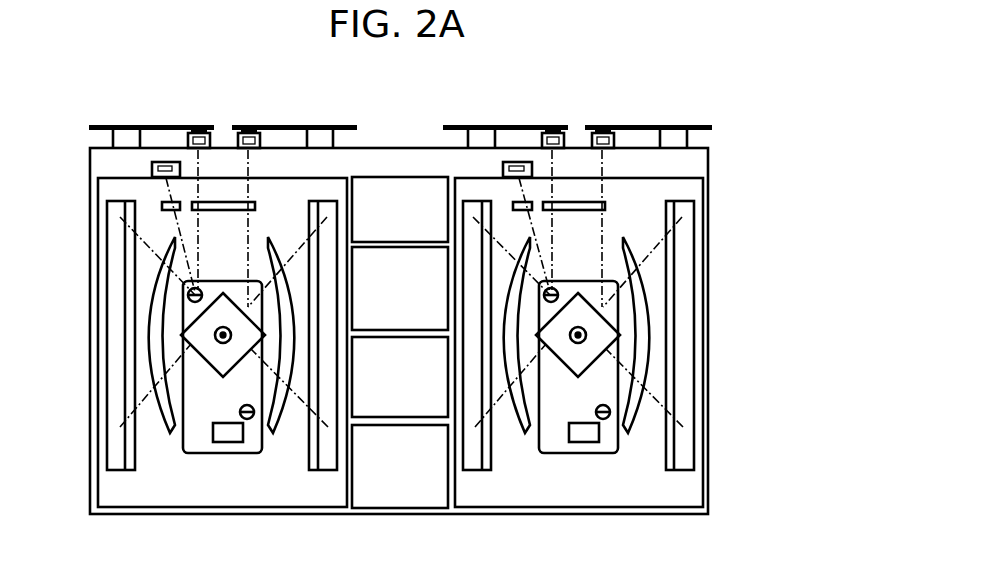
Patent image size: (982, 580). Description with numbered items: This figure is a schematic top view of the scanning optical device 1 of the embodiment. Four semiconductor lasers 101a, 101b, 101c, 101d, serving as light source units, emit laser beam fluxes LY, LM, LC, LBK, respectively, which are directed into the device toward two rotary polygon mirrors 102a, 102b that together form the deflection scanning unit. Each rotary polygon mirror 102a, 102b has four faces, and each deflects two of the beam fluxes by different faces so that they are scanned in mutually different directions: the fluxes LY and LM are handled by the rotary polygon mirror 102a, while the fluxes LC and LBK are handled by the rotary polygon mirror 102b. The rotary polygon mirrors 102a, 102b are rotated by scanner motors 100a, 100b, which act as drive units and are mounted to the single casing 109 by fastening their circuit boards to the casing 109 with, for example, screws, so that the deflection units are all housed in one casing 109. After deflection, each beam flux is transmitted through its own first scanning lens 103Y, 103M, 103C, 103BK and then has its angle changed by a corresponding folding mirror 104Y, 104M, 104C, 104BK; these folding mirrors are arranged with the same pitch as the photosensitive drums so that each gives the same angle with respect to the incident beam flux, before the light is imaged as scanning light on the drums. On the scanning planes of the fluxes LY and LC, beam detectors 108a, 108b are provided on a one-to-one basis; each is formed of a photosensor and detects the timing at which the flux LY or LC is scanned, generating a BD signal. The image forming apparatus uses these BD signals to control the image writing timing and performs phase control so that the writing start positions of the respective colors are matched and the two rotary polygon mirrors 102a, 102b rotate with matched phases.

The scanning optical device 1 is at (680, 106).
The scanner motor 100a is at (208, 453).
The scanner motor 100b is at (582, 453).
The semiconductor laser 101a is at (199, 129).
The semiconductor laser 101b is at (249, 129).
The semiconductor laser 101c is at (552, 129).
The semiconductor laser 101d is at (603, 129).
The rotary polygon mirror 102a is at (193, 358).
The rotary polygon mirror 102b is at (606, 352).
The first scanning lens 103Y is at (150, 328).
The first scanning lens 103M is at (292, 403).
The first scanning lens 103C is at (505, 400).
The first scanning lens 103BK is at (645, 332).
The folding mirror 104Y is at (110, 292).
The folding mirror 104M is at (323, 470).
The folding mirror 104C is at (473, 470).
The folding mirror 104BK is at (680, 470).
The beam detector 108a is at (152, 163).
The beam detector 108b is at (503, 163).
The casing 109 is at (410, 516).
The laser beam flux LY is at (211, 220).
The laser beam flux LM is at (265, 228).
The laser beam flux LC is at (567, 220).
The laser beam flux LBK is at (625, 228).